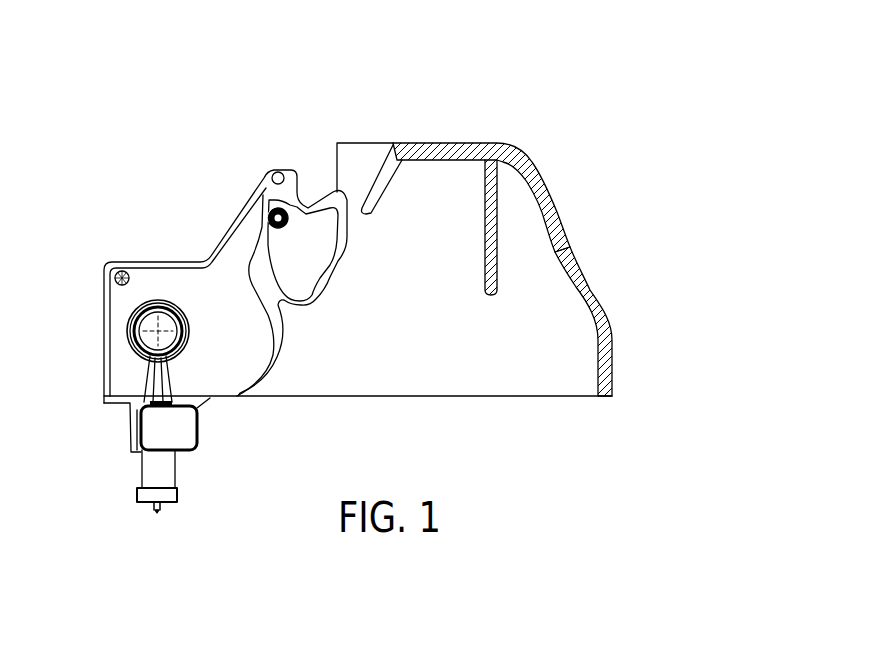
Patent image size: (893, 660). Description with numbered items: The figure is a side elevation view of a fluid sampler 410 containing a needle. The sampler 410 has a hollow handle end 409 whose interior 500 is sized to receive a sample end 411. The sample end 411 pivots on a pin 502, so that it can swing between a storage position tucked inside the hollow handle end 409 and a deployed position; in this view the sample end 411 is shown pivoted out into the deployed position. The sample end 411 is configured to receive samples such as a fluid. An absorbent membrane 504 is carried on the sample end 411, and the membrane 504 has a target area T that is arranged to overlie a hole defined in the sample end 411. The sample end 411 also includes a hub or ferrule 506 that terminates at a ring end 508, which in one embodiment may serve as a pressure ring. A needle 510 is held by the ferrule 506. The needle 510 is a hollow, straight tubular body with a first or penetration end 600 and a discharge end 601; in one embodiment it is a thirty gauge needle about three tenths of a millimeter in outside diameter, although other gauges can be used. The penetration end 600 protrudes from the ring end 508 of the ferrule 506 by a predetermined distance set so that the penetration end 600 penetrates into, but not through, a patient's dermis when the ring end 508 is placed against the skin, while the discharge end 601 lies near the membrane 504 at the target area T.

The hollow handle end 409 is at (600, 291).
The fluid sampler 410 is at (556, 171).
The sample end 411 is at (282, 348).
The interior 500 is at (459, 296).
The pin 502 is at (268, 226).
The absorbent membrane 504 is at (164, 322).
The ferrule 506 is at (148, 480).
The ring end 508 is at (172, 495).
The needle 510 is at (153, 510).
The penetration end 600 is at (157, 512).
The discharge end 601 is at (176, 341).
The target area T is at (170, 333).